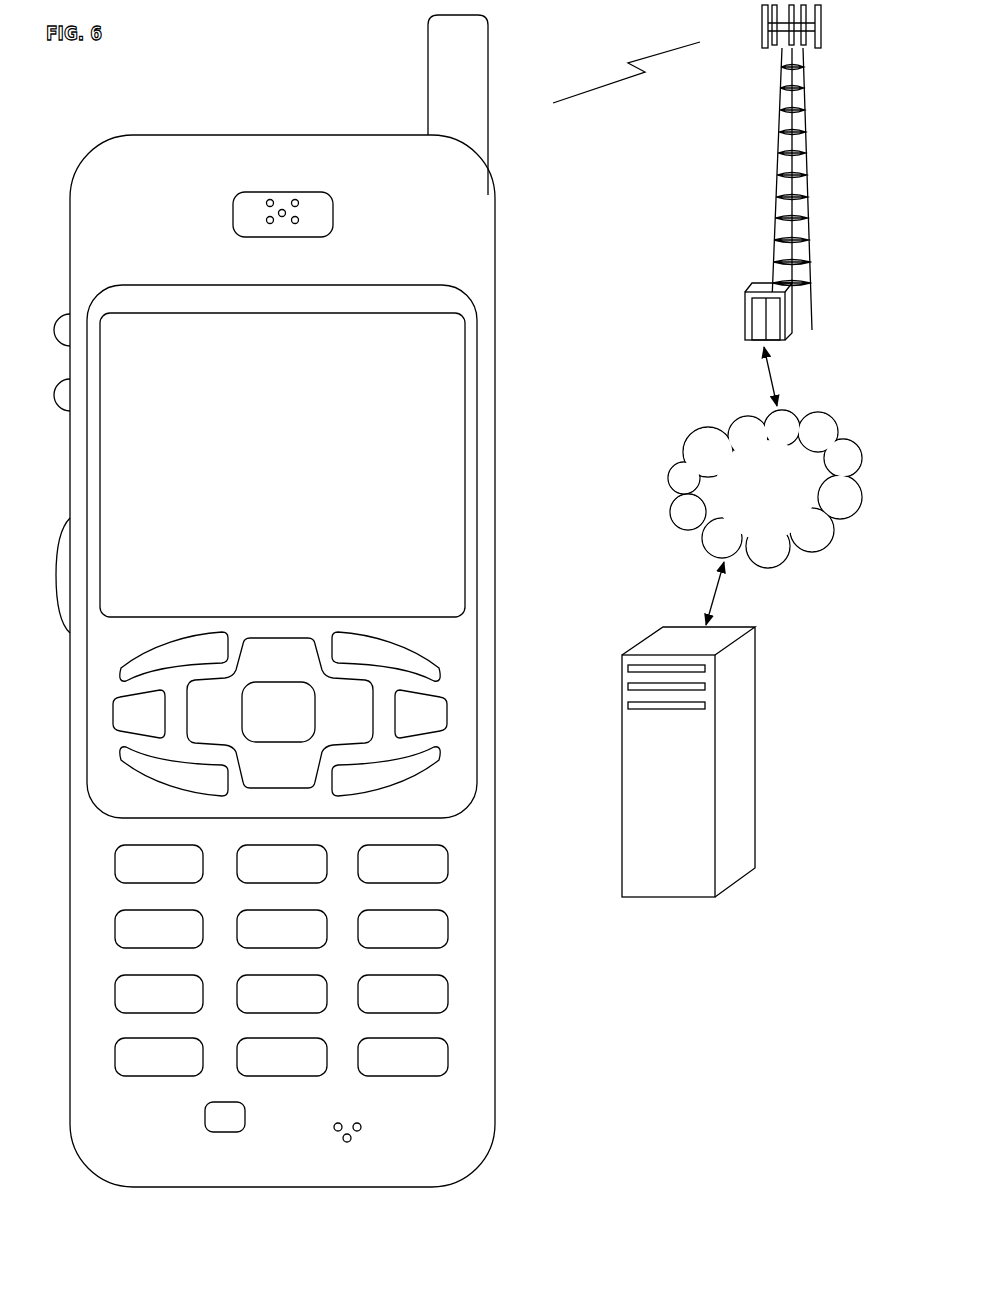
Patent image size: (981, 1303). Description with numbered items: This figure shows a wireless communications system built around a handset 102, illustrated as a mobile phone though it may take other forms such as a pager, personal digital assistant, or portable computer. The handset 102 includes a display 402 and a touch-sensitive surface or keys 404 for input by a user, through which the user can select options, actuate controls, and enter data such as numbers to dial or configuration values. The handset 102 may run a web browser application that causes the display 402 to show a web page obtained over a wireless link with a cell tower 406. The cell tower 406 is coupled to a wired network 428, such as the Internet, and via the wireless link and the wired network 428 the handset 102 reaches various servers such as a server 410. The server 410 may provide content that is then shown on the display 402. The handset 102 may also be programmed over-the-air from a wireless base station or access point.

The handset 102 is at (312, 617).
The display 402 is at (465, 327).
The keys 404 is at (503, 1083).
The cell tower 406 is at (780, 188).
The wired network 428 is at (688, 537).
The server 410 is at (660, 897).